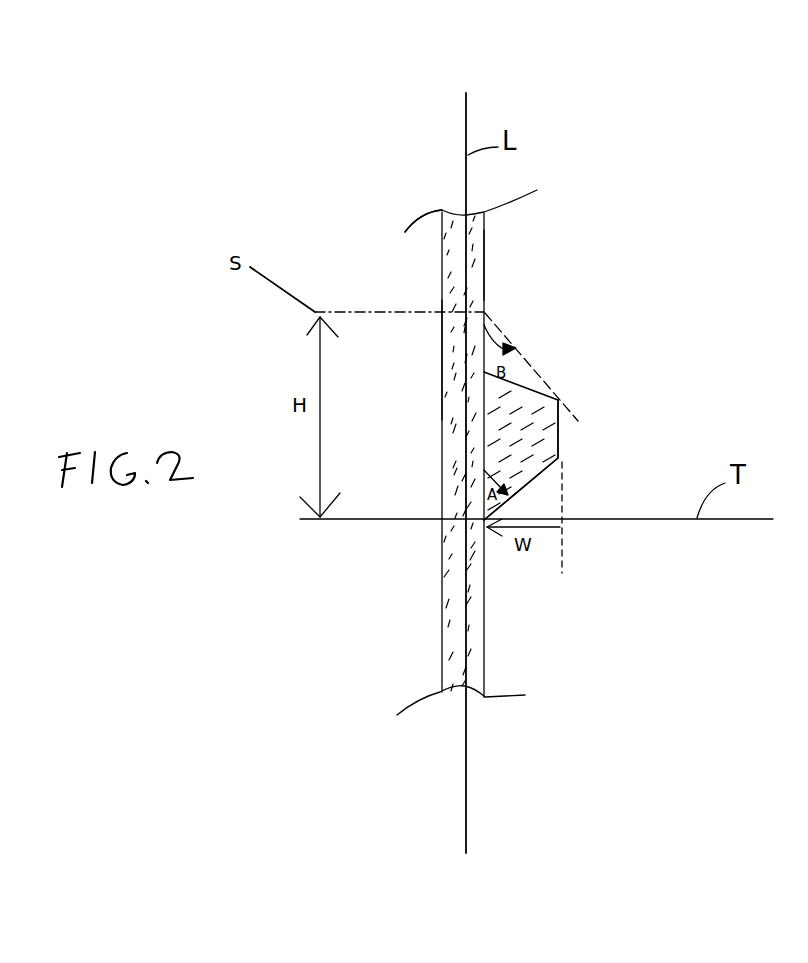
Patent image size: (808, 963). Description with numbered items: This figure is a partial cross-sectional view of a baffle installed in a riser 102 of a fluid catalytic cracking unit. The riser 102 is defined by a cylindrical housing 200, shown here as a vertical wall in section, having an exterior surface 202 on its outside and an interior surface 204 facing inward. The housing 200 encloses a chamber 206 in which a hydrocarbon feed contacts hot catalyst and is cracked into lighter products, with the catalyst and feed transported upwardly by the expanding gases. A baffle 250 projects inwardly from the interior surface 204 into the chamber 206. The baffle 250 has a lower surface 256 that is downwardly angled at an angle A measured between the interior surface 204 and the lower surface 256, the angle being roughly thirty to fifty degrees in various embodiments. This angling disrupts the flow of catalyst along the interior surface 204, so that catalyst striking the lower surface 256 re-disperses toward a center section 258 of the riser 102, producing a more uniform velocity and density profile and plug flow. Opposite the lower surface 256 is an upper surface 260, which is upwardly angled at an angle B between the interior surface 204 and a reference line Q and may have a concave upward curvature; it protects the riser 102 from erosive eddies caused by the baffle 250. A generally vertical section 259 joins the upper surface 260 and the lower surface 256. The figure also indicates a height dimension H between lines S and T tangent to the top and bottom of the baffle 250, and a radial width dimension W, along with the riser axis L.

The riser 102 is at (440, 248).
The cylindrical housing 200 is at (437, 283).
The exterior surface 202 is at (440, 363).
The interior surface 204 is at (484, 267).
The chamber 206 is at (629, 212).
The baffle 250 is at (540, 397).
The lower surface 256 is at (519, 491).
The center section 258 is at (703, 250).
The generally vertical section 259 is at (558, 440).
The upper surface 260 is at (523, 367).